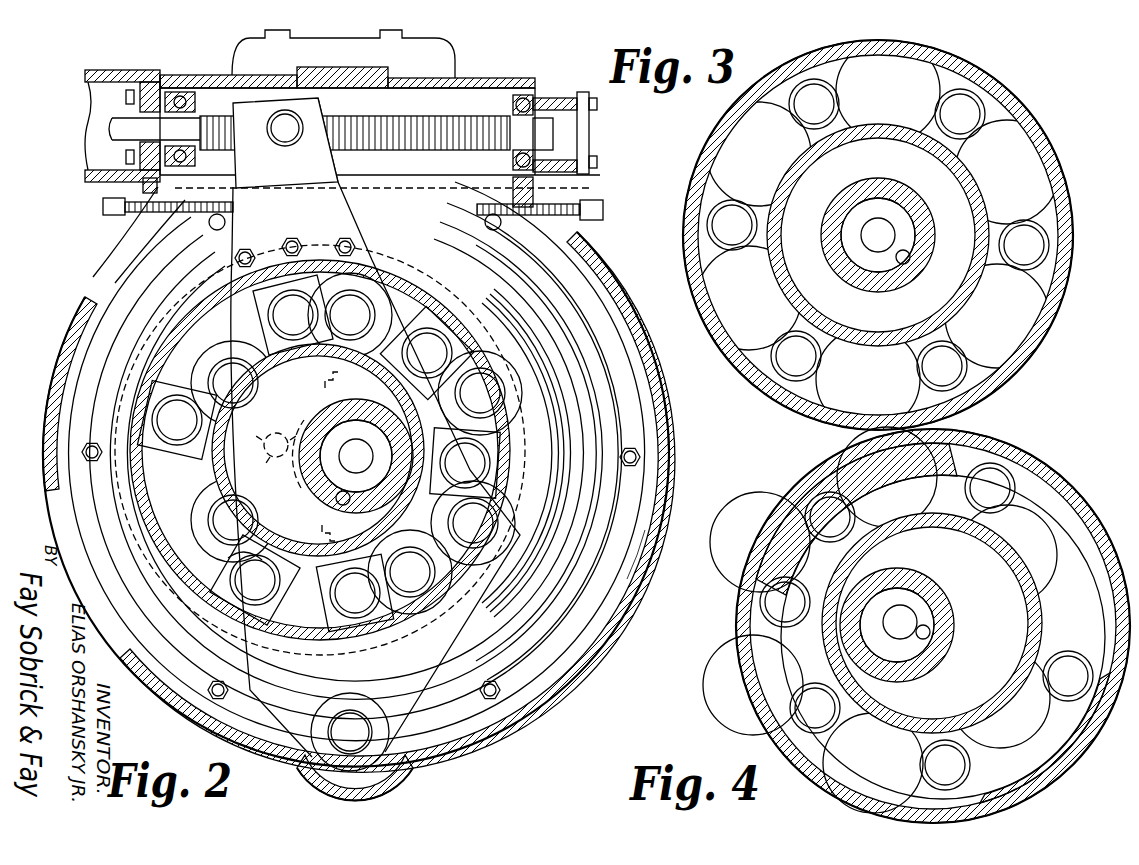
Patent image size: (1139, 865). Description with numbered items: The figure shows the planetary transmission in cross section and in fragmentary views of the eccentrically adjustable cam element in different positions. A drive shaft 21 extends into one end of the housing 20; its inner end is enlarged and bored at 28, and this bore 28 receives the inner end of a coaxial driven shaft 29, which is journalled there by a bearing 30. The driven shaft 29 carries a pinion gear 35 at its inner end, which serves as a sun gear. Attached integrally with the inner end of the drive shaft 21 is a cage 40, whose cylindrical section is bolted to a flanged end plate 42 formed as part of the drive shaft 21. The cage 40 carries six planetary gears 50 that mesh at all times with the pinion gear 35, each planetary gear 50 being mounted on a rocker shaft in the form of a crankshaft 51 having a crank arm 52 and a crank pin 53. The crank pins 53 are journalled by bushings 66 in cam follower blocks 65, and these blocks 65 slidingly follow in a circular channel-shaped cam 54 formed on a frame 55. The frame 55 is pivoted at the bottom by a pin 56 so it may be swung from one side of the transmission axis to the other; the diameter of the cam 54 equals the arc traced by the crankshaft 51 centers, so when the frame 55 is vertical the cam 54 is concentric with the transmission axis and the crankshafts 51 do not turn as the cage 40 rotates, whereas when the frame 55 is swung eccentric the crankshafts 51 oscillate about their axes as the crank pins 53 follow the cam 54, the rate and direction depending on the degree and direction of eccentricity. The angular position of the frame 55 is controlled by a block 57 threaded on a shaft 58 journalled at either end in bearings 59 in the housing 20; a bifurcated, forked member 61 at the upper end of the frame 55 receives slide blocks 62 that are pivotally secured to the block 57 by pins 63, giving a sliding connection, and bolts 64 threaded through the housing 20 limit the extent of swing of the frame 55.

In FIG. 2, the housing 20 is at (60, 350).
In FIG. 2, the drive shaft 21 is at (352, 410).
In FIG. 3, the drive shaft 21 is at (872, 193).
In FIG. 4, the drive shaft 21 is at (882, 578).
In FIG. 2, the bore 28 is at (345, 506).
In FIG. 3, the bore 28 is at (908, 257).
In FIG. 4, the bore 28 is at (930, 633).
In FIG. 2, the driven shaft 29 is at (362, 470).
In FIG. 3, the driven shaft 29 is at (882, 228).
In FIG. 4, the driven shaft 29 is at (906, 625).
In FIG. 2, the bearing 30 is at (368, 432).
In FIG. 3, the bearing 30 is at (900, 224).
In FIG. 4, the bearing 30 is at (908, 603).
In FIG. 2, the pinion gear 35 is at (312, 425).
In FIG. 2, the cage 40 is at (652, 478).
In FIG. 2, the flanged end plate 42 is at (658, 535).
In FIG. 2, the planetary gears 50 is at (264, 448).
In FIG. 2, the crankshaft 51 is at (356, 443).
In FIG. 3, the crankshaft 51 is at (737, 285).
In FIG. 4, the crankshaft 51 is at (722, 550).
In FIG. 2, the crank arm 52 is at (196, 542).
In FIG. 3, the crank arm 52 is at (757, 340).
In FIG. 4, the crank arm 52 is at (738, 585).
In FIG. 2, the crank pin 53 is at (266, 585).
In FIG. 3, the crank pin 53 is at (796, 370).
In FIG. 4, the crank pin 53 is at (786, 615).
In FIG. 2, the cam 54 is at (500, 457).
In FIG. 3, the cam 54 is at (985, 368).
In FIG. 4, the cam 54 is at (1102, 612).
In FIG. 2, the frame 55 is at (555, 595).
In FIG. 2, the pin 56 is at (300, 762).
In FIG. 2, the block 57 is at (343, 112).
In FIG. 2, the shaft 58 is at (448, 122).
In FIG. 2, the bearings 59 is at (188, 100).
In FIG. 2, the bifurcated forked member 61 is at (243, 164).
In FIG. 2, the slide blocks 62 is at (288, 113).
In FIG. 2, the pins 63 is at (305, 100).
In FIG. 2, the bolts 64 is at (190, 214).
In FIG. 2, the cam follower blocks 65 is at (212, 585).
In FIG. 2, the bushings 66 is at (246, 602).